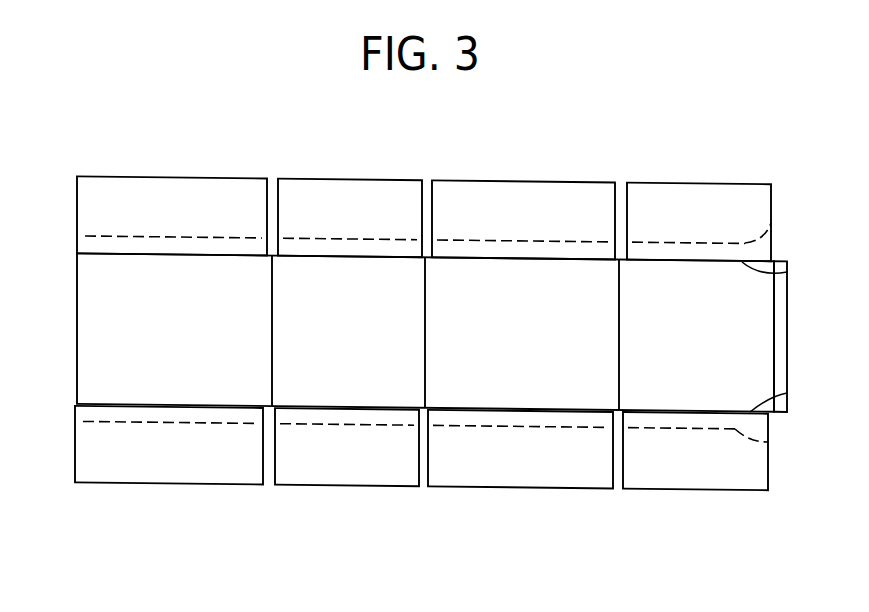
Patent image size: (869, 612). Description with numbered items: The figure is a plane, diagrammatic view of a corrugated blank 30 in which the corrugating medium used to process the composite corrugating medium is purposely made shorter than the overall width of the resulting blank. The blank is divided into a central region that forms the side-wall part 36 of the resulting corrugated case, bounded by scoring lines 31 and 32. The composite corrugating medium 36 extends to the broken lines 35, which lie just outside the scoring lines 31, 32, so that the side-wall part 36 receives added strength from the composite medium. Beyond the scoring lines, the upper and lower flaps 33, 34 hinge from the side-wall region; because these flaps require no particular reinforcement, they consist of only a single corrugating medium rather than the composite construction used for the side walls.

The corrugated blank 30 is at (613, 512).
The scoring line 31 is at (787, 272).
The scoring line 32 is at (787, 393).
The upper flaps 33 is at (185, 197).
The lower flaps 34 is at (194, 467).
The broken lines 35 is at (771, 223).
The side-wall part 36 is at (92, 347).